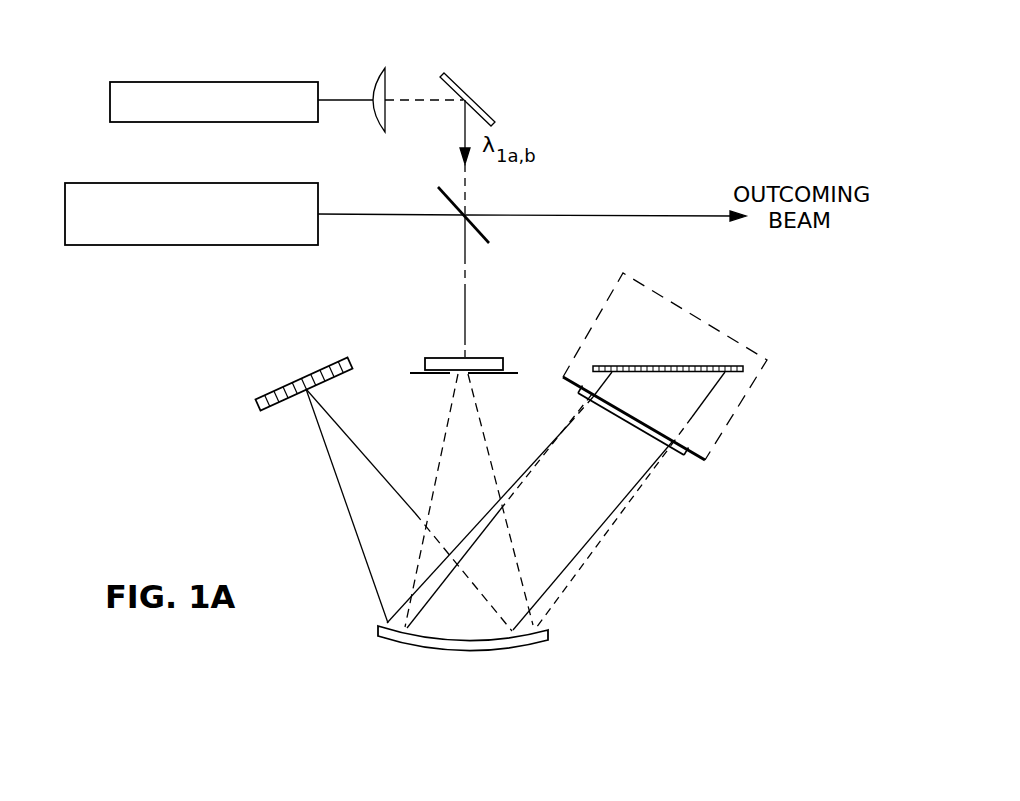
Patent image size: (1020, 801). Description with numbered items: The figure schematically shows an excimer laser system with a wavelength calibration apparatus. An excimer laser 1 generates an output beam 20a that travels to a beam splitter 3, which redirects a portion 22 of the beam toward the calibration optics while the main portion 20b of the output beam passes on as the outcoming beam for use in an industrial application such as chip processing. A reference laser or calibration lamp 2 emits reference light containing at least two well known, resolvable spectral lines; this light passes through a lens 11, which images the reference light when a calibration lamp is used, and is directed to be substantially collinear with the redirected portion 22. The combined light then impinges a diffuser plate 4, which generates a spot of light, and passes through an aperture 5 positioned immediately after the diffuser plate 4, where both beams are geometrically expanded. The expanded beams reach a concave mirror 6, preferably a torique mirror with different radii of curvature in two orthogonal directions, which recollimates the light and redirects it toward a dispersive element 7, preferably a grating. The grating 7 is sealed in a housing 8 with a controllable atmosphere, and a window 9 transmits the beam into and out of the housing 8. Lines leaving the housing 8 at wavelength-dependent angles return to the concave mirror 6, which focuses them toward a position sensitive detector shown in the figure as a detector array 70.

The excimer laser 1 is at (205, 197).
The reference laser or calibration lamp 2 is at (240, 96).
The beam splitter 3 is at (490, 237).
The diffuser plate 4 is at (478, 366).
The aperture 5 is at (415, 376).
The concave mirror 6 is at (462, 651).
The dispersive element 7 is at (633, 365).
The housing 8 is at (727, 417).
The window 9 is at (673, 462).
The lens 11 is at (378, 72).
The output beam 20a is at (356, 214).
The main portion of the output beam 20b is at (596, 214).
The redirected portion of the output beam 22 is at (463, 305).
The detector array 70 is at (302, 384).